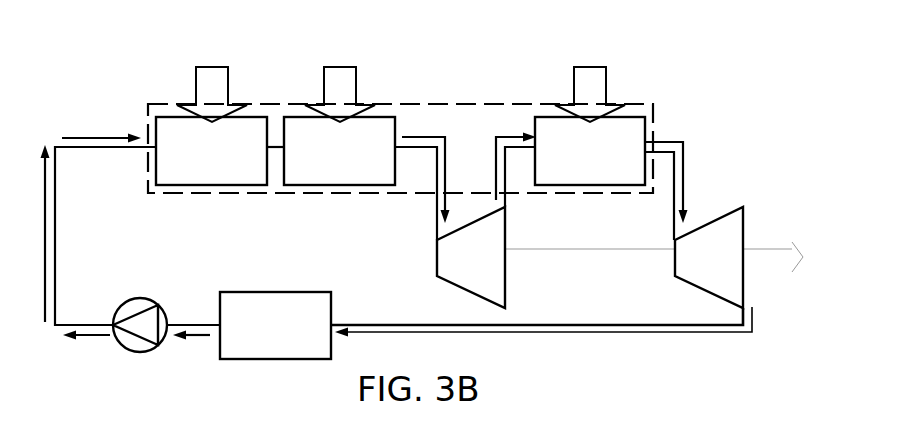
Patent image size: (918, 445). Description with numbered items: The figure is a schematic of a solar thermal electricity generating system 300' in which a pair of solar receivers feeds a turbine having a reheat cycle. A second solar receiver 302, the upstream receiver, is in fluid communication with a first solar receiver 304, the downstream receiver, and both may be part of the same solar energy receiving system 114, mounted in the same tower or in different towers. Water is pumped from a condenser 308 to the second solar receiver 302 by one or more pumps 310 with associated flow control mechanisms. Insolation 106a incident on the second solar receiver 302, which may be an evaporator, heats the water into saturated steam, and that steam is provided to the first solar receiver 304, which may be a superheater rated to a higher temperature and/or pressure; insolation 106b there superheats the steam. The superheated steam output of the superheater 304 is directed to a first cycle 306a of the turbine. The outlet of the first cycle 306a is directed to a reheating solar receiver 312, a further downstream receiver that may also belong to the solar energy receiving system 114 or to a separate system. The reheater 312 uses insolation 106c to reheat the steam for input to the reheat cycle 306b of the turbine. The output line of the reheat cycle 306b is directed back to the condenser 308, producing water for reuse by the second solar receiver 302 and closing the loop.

The solar thermal electricity generating system 300' is at (423, 174).
The insolation 106a is at (207, 90).
The insolation 106b is at (343, 90).
The insolation 106c is at (598, 90).
The solar energy receiving system 114 is at (445, 103).
The second solar receiver 302 is at (196, 161).
The first solar receiver 304 is at (324, 161).
The reheating solar receiver 312 is at (574, 161).
The first cycle of the turbine 306a is at (450, 266).
The reheat cycle of the turbine 306b is at (688, 266).
The condenser 308 is at (260, 335).
The pump 310 is at (147, 298).